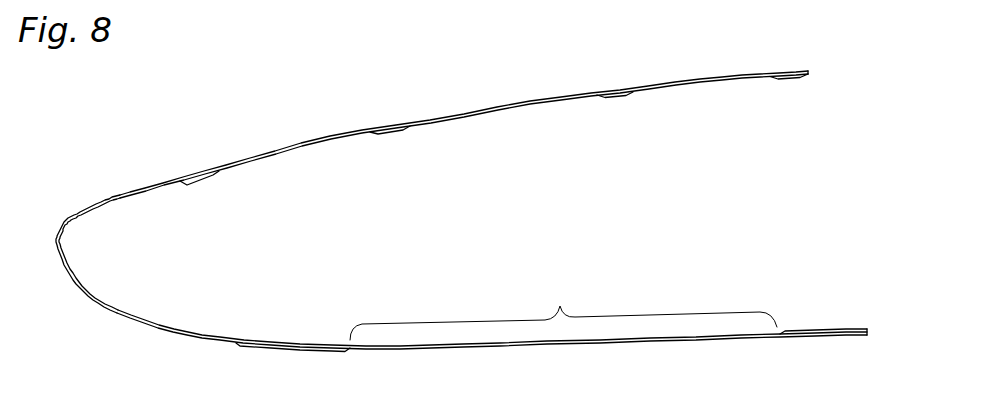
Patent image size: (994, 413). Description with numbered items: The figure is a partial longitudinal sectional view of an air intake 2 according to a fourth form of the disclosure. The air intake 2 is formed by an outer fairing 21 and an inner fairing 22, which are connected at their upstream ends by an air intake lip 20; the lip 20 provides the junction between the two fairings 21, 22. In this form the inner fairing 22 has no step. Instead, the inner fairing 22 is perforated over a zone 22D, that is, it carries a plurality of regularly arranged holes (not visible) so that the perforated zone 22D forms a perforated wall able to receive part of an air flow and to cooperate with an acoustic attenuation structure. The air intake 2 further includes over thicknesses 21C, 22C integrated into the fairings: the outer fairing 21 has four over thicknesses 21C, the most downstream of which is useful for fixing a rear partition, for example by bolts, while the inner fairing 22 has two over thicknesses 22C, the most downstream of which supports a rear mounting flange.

The air intake 2 is at (147, 100).
The air intake lip 20 is at (135, 192).
The outer fairing 21 is at (500, 106).
The over thickness 21C is at (388, 132).
The inner fairing 22 is at (598, 345).
The over thickness 22C is at (326, 343).
The perforated zone 22D is at (563, 310).